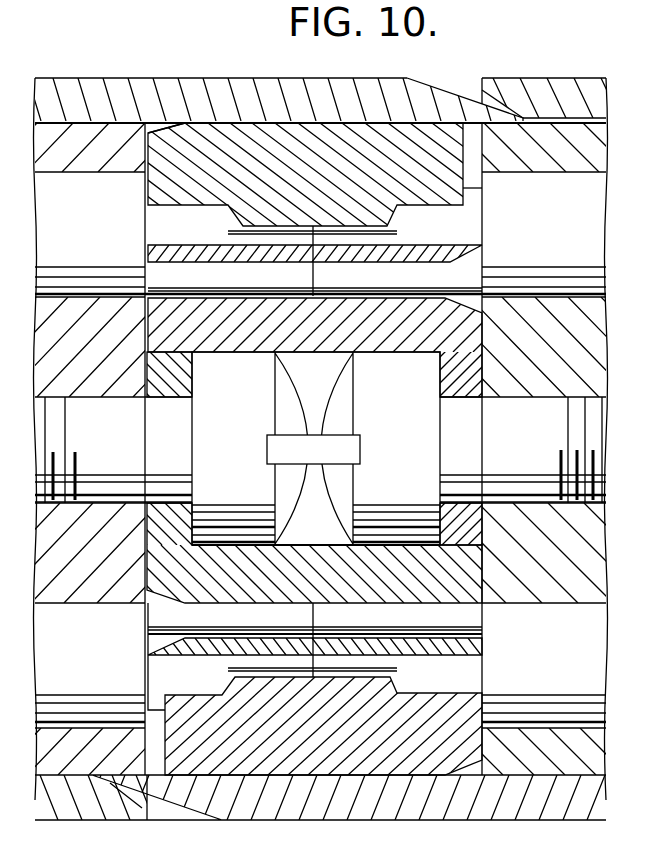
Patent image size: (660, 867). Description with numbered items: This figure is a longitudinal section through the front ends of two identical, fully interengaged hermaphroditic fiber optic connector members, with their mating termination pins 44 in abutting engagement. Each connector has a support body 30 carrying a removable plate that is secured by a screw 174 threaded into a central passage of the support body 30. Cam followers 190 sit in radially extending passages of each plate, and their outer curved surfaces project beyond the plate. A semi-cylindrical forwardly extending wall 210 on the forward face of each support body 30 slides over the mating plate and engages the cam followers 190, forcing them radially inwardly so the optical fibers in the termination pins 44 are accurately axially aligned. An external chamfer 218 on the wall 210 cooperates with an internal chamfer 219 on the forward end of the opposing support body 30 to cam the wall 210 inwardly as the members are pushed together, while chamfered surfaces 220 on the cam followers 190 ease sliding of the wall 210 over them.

The support body 30 is at (606, 96).
The termination pin 44 is at (320, 257).
The screw 174 is at (320, 450).
The cam follower 190 is at (283, 126).
The semi-cylindrical forwardly extending wall 210 is at (248, 78).
The chamfer 218 is at (432, 86).
The internal chamfer 219 is at (503, 108).
The chamfered surfaces 220 is at (153, 125).